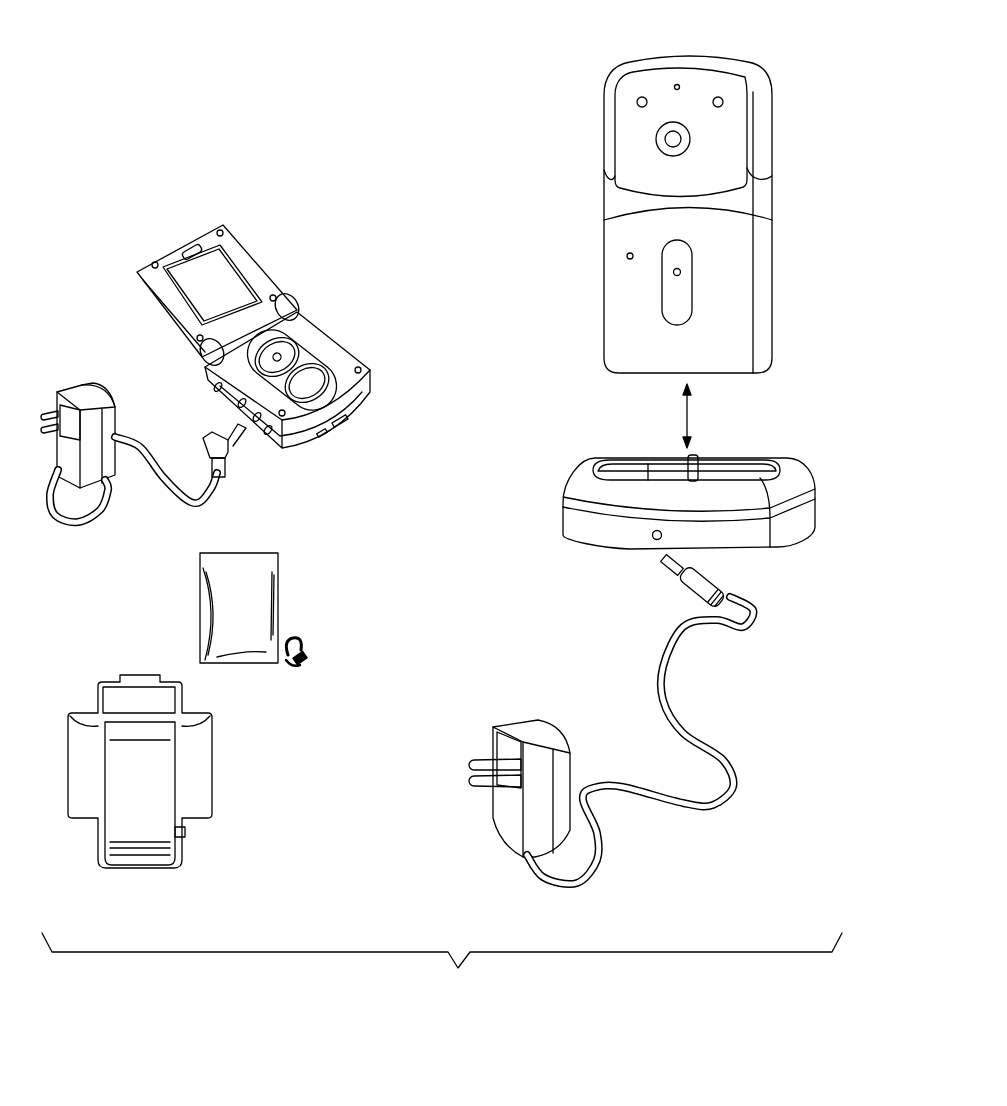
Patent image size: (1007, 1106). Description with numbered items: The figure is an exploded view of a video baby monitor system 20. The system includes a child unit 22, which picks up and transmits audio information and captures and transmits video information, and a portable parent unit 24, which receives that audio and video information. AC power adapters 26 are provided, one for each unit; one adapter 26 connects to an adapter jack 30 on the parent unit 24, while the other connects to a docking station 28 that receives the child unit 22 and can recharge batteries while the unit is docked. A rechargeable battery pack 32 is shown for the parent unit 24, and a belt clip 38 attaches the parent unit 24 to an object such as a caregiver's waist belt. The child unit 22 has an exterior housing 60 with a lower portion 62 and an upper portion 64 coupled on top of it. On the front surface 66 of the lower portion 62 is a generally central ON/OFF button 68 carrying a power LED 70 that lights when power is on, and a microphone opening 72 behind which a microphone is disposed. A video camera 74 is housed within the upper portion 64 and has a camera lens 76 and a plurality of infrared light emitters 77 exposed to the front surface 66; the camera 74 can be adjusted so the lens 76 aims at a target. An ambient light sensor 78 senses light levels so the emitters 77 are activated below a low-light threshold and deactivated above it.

The video baby monitor system 20 is at (236, 98).
The child unit 22 is at (798, 226).
The parent unit 24 is at (316, 293).
The AC power adapter 26 is at (73, 398).
The docking station 28 is at (582, 480).
The adapter jack 30 is at (252, 428).
The rechargeable battery pack 32 is at (257, 597).
The belt clip 38 is at (195, 777).
The exterior housing 60 is at (778, 270).
The lower portion 62 is at (732, 340).
The upper portion 64 is at (762, 113).
The front surface 66 is at (667, 365).
The ON/OFF button 68 is at (680, 305).
The power LED 70 is at (681, 270).
The microphone opening 72 is at (626, 254).
The video camera 74 is at (704, 142).
The camera lens 76 is at (656, 140).
The infrared light emitters 77 is at (638, 97).
The ambient light sensor 78 is at (680, 78).